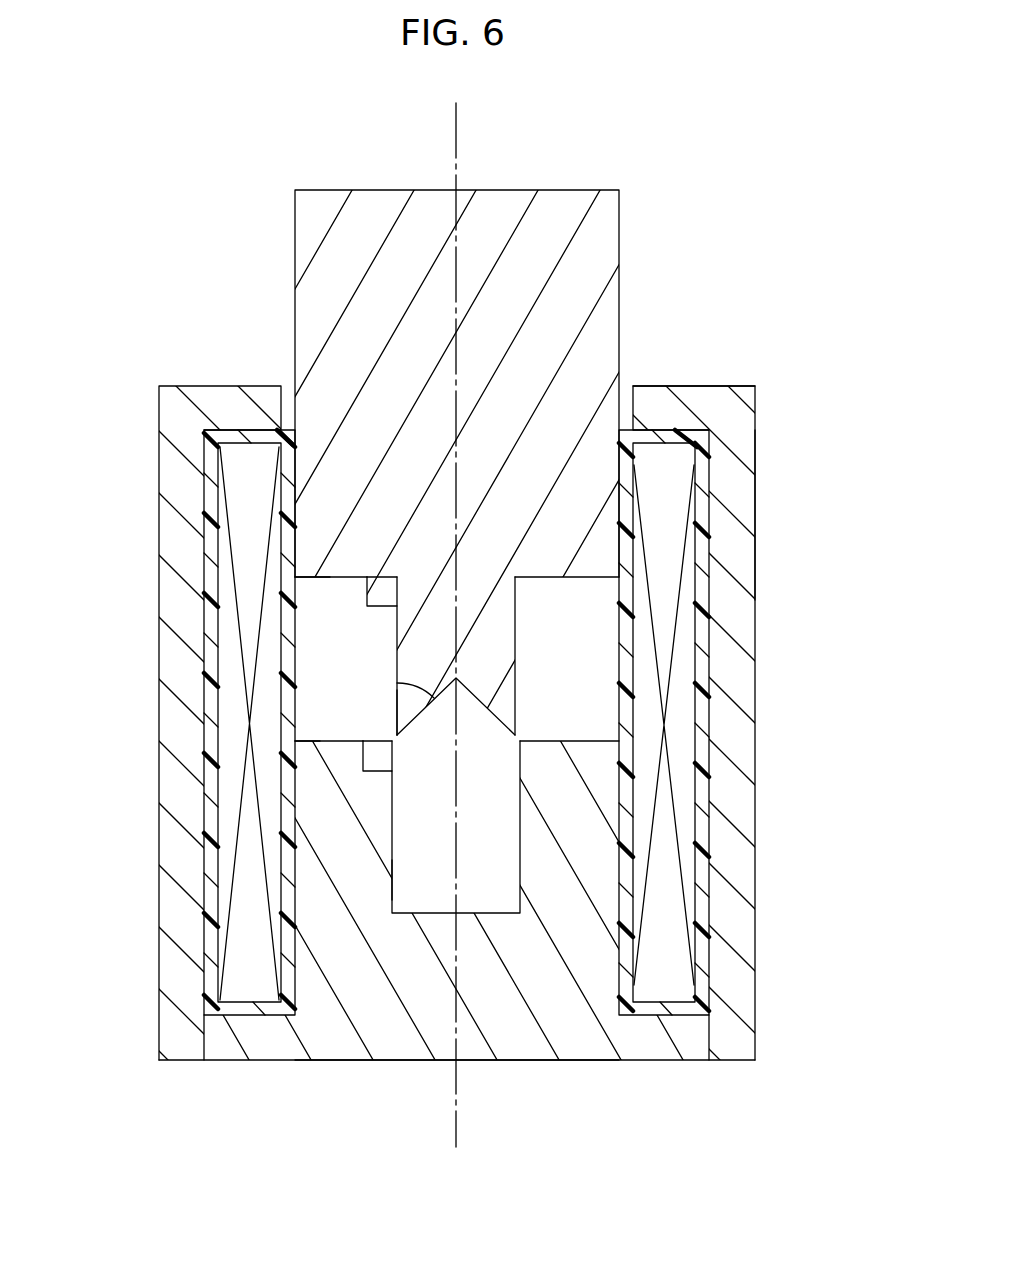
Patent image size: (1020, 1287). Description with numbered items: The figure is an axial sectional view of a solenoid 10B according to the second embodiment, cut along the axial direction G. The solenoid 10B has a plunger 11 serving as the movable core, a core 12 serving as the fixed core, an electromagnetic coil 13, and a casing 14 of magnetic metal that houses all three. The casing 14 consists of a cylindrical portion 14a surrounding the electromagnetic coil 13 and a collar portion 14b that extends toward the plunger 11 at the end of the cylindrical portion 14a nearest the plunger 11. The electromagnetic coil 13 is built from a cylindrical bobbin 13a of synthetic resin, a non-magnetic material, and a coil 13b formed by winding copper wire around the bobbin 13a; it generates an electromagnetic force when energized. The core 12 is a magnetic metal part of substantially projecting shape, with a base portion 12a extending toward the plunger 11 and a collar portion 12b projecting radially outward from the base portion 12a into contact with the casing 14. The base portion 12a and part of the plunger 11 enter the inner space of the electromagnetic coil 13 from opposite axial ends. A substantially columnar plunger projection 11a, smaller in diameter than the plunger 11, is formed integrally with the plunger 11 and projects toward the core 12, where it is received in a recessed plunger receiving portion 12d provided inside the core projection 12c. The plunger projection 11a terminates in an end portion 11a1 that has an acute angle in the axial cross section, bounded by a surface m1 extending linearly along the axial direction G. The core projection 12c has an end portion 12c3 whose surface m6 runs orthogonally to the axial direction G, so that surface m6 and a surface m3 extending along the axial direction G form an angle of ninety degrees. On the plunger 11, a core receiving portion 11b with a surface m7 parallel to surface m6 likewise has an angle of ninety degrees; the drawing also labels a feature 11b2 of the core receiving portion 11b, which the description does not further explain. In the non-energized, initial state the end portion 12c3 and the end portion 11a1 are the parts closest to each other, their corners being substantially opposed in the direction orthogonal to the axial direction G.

The solenoid 10B is at (682, 115).
The axial direction G is at (457, 138).
The plunger 11 is at (621, 282).
The plunger projection 11a is at (488, 629).
The end portion 11a1 is at (507, 718).
The core receiving portion 11b is at (350, 662).
The notch of upper core recess 11b2 is at (343, 600).
The core 12 is at (607, 1062).
The base portion 12a is at (363, 968).
The collar portion 12b is at (238, 1047).
The core projection 12c is at (343, 837).
The end portion 12c3 is at (367, 757).
The plunger receiving portion 12d is at (495, 895).
The electromagnetic coil 13 is at (712, 908).
The bobbin 13a is at (703, 946).
The coil 13b is at (672, 959).
The casing 14 is at (757, 440).
The cylindrical portion 14a is at (735, 507).
The collar portion 14b is at (668, 402).
The surface m1 is at (397, 698).
The surface m3 is at (390, 895).
The surface m6 is at (317, 740).
The surface m7 is at (330, 578).